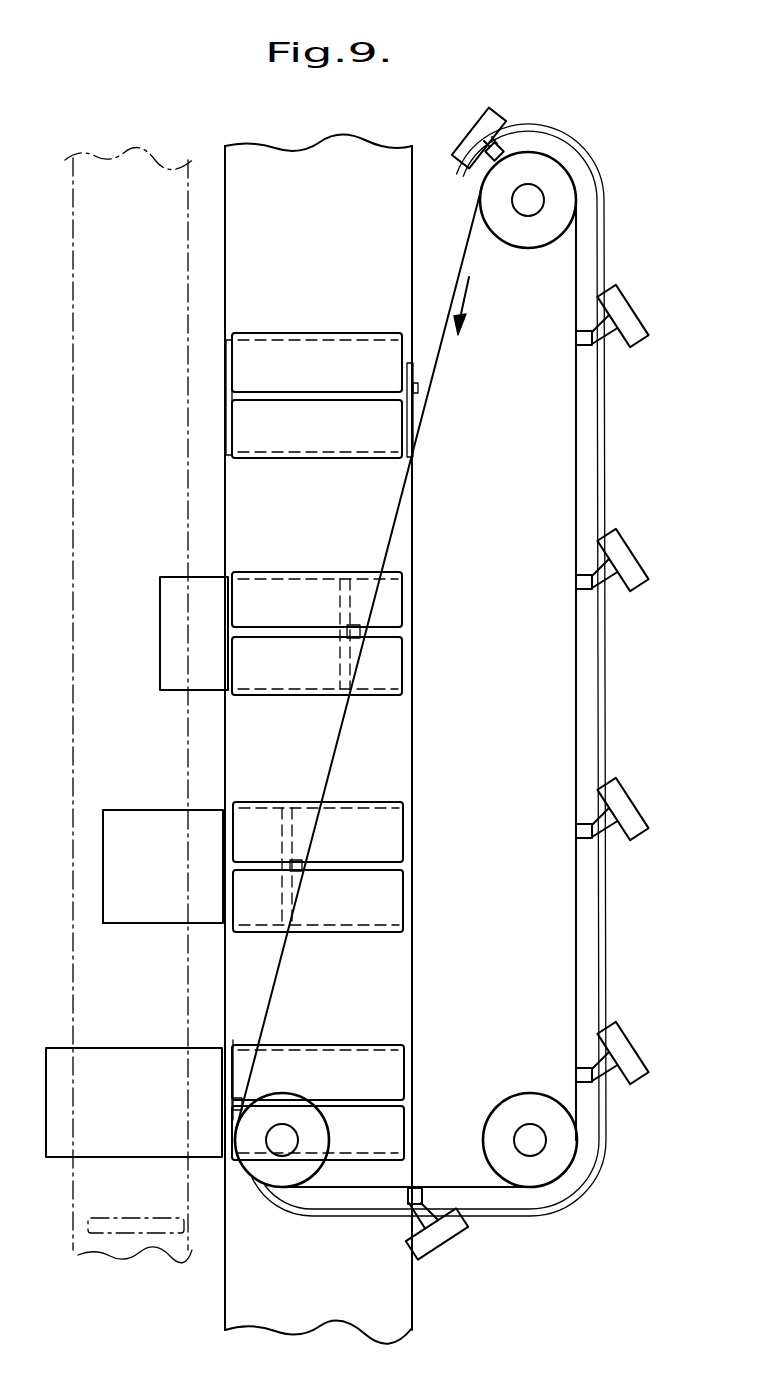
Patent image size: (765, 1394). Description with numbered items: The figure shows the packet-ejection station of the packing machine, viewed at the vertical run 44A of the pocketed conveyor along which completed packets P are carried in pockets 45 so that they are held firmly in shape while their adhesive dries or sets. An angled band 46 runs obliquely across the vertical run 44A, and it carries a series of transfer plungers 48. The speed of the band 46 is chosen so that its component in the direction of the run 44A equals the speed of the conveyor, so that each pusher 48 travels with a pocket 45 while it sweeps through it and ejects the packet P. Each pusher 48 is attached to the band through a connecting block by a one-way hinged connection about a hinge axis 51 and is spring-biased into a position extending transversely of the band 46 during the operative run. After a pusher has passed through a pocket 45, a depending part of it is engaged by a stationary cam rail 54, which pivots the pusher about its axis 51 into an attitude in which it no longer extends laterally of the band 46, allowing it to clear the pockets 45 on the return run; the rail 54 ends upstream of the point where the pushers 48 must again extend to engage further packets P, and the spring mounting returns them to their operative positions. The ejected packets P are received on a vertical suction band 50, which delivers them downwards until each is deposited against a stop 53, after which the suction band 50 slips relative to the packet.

The vertical run 44A is at (321, 173).
The pocket 45 is at (343, 333).
The angled band 46 is at (392, 541).
The transfer plunger 48 is at (632, 352).
The vertical suction band 50 is at (148, 165).
The hinge axis 51 is at (412, 1220).
The stop 53 is at (86, 1228).
The cam rail 54 is at (525, 1217).
The packet P is at (232, 380).